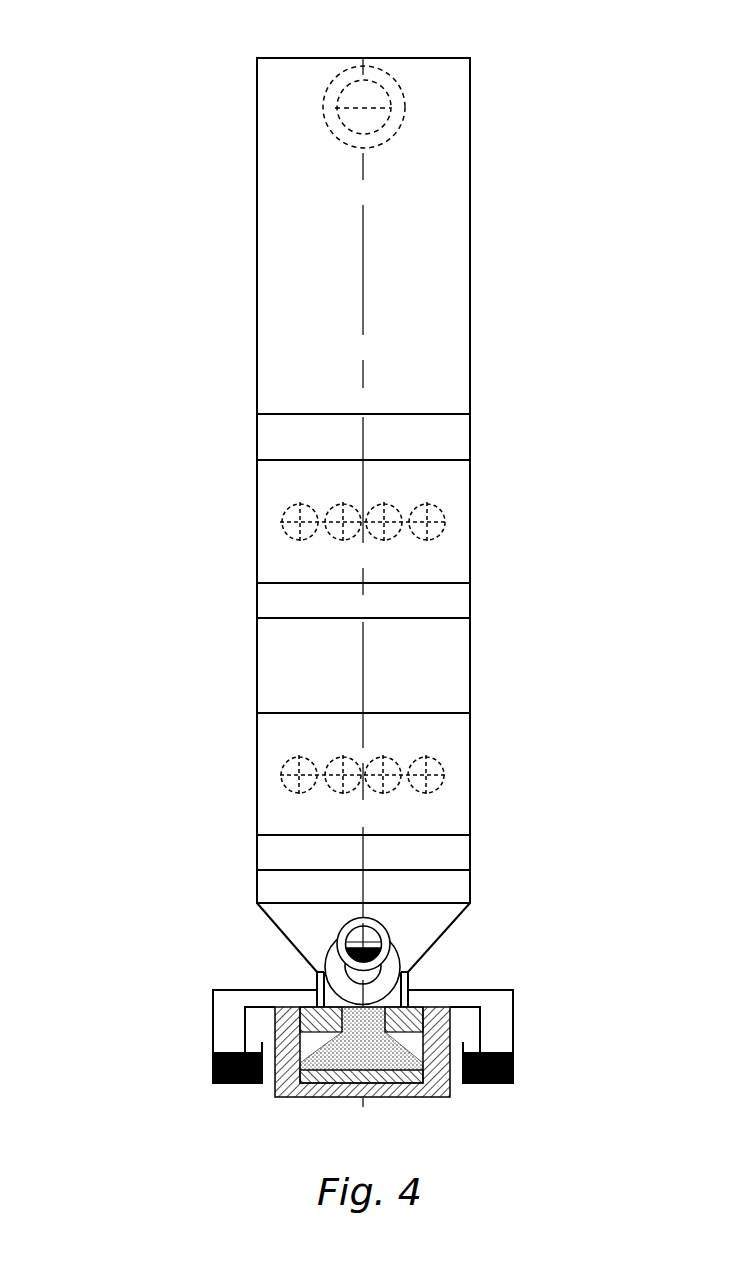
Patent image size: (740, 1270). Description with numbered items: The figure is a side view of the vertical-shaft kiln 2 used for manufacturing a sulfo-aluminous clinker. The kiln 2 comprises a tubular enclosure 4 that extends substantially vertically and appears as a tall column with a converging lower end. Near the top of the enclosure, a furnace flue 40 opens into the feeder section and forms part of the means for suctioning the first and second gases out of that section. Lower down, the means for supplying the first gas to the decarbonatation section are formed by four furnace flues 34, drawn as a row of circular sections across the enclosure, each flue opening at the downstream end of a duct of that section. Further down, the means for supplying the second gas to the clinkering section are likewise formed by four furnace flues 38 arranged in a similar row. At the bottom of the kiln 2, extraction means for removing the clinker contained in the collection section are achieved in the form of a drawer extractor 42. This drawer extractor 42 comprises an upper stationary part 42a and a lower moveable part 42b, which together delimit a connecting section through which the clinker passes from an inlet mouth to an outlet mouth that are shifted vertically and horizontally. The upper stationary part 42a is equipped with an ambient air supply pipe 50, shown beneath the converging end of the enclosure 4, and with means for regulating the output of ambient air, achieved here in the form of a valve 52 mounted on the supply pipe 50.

The vertical-shaft kiln 2 is at (614, 215).
The tubular enclosure 4 is at (470, 172).
The furnace flue 40 is at (370, 100).
The furnace flues 34 is at (334, 506).
The furnace flues 38 is at (334, 760).
The ambient air supply pipe 50 is at (388, 968).
The valve 52 is at (382, 951).
The drawer extractor 42 is at (103, 960).
The upper stationary part 42a is at (228, 990).
The lower moveable part 42b is at (283, 1096).